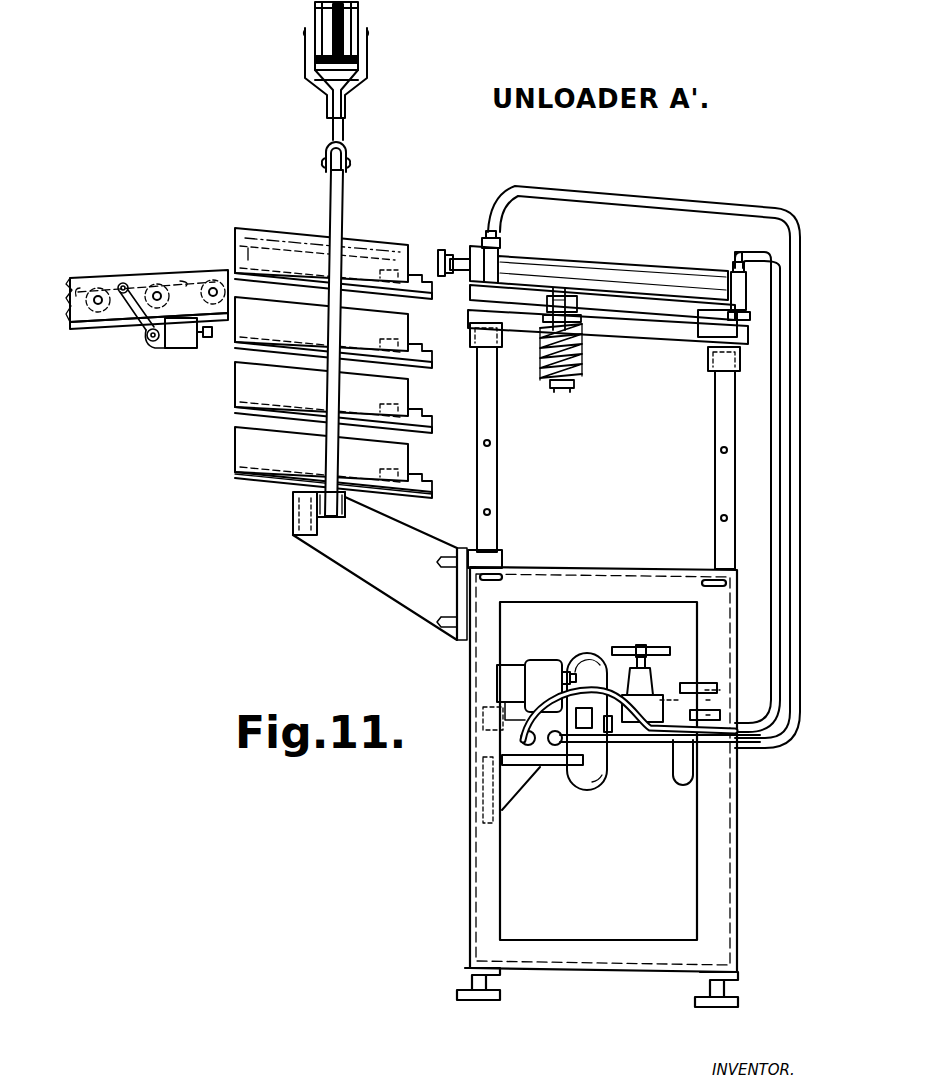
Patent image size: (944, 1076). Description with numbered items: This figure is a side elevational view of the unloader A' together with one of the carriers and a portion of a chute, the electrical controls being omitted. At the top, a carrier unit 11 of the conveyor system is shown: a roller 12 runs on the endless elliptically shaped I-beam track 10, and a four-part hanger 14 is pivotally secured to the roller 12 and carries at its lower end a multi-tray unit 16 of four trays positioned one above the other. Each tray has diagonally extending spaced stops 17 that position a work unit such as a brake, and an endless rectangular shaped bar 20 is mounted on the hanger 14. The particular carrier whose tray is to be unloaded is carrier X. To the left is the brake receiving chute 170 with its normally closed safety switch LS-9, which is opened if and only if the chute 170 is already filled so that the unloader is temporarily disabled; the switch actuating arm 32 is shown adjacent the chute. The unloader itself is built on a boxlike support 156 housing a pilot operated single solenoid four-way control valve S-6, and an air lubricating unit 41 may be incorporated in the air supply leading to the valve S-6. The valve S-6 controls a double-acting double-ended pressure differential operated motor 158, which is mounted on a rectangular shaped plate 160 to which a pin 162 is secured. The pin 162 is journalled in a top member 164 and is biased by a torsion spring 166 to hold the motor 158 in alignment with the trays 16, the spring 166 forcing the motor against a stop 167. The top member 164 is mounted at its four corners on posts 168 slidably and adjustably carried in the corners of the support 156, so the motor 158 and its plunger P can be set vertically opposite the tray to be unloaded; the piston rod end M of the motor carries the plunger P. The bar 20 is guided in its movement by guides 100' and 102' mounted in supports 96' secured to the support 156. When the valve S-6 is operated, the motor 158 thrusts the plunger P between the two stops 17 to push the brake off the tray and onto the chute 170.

The roller 12 is at (318, 19).
The I-beam track 10 is at (365, 70).
The hanger 14 is at (345, 128).
The carrier X is at (268, 228).
The bar 20 is at (338, 215).
The piston rod M is at (430, 250).
The motor plunger P is at (445, 250).
The brake receiving chute 170 is at (108, 272).
The switch actuating arm 32 is at (113, 330).
The safety switch LS-9 is at (173, 350).
The multi-tray unit 16 is at (245, 330).
The stops 17 is at (410, 290).
The carrier unit 11 is at (247, 479).
The guide 100' is at (284, 515).
The guide 102' is at (388, 524).
The supports 96' is at (375, 568).
The pin 162 is at (565, 292).
The pressure differential operated motor 158 is at (615, 266).
The plate 160 is at (635, 300).
The stop 167 is at (736, 327).
The top member 164 is at (632, 336).
The torsion spring 166 is at (572, 380).
The posts 168 is at (718, 492).
The solenoid four-way control valve S-6 is at (545, 665).
The air lubricating unit 41 is at (614, 752).
The boxlike support 156 is at (486, 872).